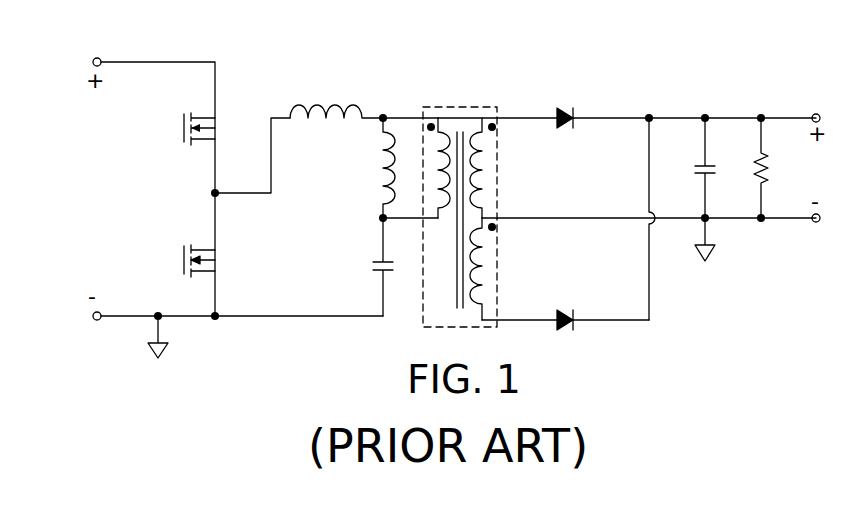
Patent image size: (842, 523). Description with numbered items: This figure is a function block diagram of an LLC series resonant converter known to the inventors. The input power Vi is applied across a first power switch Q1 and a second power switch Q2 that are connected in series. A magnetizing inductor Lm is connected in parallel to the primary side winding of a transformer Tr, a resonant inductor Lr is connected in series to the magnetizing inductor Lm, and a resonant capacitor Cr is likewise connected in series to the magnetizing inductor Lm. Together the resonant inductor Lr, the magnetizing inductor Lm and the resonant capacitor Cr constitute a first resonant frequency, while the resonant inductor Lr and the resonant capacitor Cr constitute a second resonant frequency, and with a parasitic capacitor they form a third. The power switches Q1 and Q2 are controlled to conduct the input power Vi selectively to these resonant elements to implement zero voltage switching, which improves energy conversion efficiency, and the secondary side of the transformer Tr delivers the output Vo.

The first power switch Q1 is at (182, 131).
The second power switch Q2 is at (182, 263).
The resonant inductor Lr is at (338, 104).
The magnetizing inductor Lm is at (387, 135).
The transformer Tr is at (465, 106).
The resonant capacitor Cr is at (393, 267).
The input power Vi is at (85, 194).
The output voltage Vo is at (816, 171).